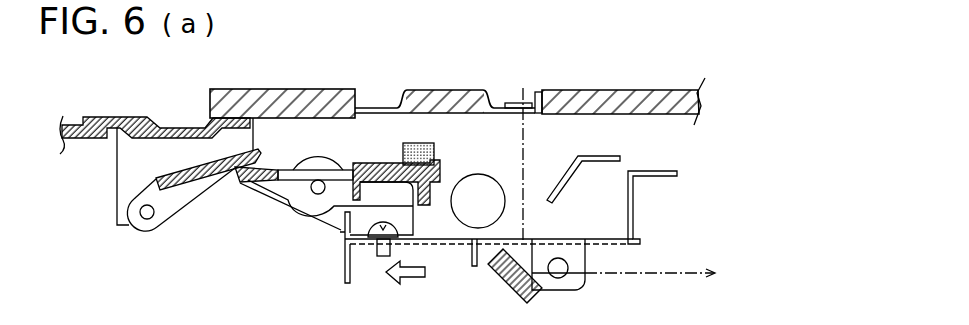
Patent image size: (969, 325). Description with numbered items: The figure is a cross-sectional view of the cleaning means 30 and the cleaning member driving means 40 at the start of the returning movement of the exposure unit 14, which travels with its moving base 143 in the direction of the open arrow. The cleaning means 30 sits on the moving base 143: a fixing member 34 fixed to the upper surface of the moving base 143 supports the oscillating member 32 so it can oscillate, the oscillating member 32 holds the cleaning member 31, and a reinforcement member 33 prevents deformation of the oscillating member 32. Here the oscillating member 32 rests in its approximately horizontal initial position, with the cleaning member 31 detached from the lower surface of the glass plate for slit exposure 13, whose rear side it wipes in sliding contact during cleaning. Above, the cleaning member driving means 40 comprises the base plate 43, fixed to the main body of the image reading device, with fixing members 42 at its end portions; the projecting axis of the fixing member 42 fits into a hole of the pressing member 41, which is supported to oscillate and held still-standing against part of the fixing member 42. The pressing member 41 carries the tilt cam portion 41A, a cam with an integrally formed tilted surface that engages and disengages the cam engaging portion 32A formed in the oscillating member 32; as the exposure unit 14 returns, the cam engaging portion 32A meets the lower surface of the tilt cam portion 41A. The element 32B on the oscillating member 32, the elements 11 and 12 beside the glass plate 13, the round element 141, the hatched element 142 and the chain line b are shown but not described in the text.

The first cover plate 11 is at (587, 90).
The second cover plate 12 is at (448, 90).
The glass plate for slit exposure 13 is at (290, 89).
The exposure unit 14 is at (665, 218).
The cleaning means 30 is at (272, 216).
The cleaning member 31 is at (423, 139).
The oscillating member 32 is at (354, 158).
The cam engaging portion 32A is at (265, 168).
The pivot shaft 32B is at (319, 180).
The reinforcement member 33 is at (390, 163).
The fixing member 34 is at (316, 226).
The cleaning member driving means 40 is at (131, 234).
The pressing member 41 is at (194, 208).
The tilt cam portion 41A is at (199, 181).
The fixing member 42 is at (117, 184).
The base plate 43 is at (133, 116).
The roller 141 is at (481, 174).
The spring 142 is at (510, 292).
The moving base 143 is at (624, 246).
The reference line b is at (525, 157).